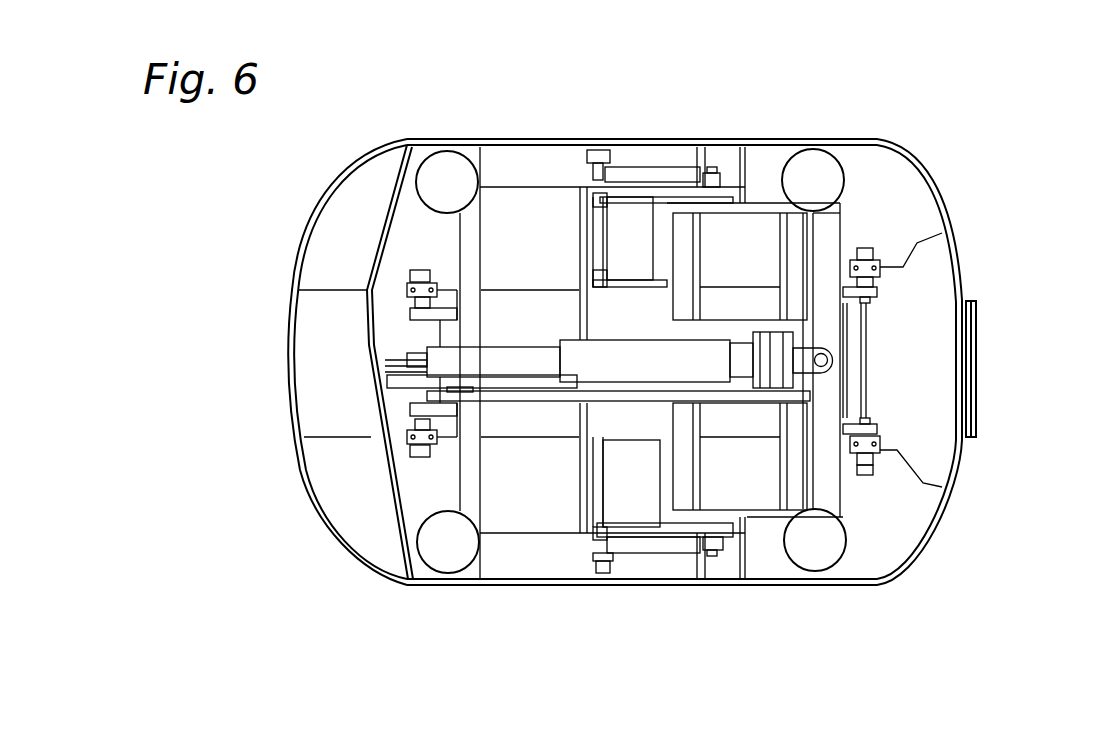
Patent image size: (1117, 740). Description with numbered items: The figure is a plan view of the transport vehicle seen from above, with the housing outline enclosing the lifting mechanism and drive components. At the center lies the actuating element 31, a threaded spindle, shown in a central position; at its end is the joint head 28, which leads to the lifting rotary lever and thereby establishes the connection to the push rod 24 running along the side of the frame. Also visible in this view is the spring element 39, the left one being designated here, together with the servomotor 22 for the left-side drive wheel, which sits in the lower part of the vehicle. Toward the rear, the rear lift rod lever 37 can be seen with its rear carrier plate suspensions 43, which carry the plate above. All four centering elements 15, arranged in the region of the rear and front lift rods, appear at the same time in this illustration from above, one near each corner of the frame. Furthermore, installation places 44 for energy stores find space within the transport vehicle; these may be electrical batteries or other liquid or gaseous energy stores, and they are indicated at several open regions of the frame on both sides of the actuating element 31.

The centering element 15 is at (807, 172).
The servomotor for left-side drive wheel 22 is at (632, 493).
The push rod 24 is at (823, 232).
The joint head 28 is at (405, 362).
The actuating element, threaded spindle 31 is at (612, 355).
The rear lift rod lever 37 is at (872, 293).
The spring element 39 is at (697, 547).
The rear carrier plate suspension 43 is at (880, 450).
The installation place for energy store 44 is at (727, 265).